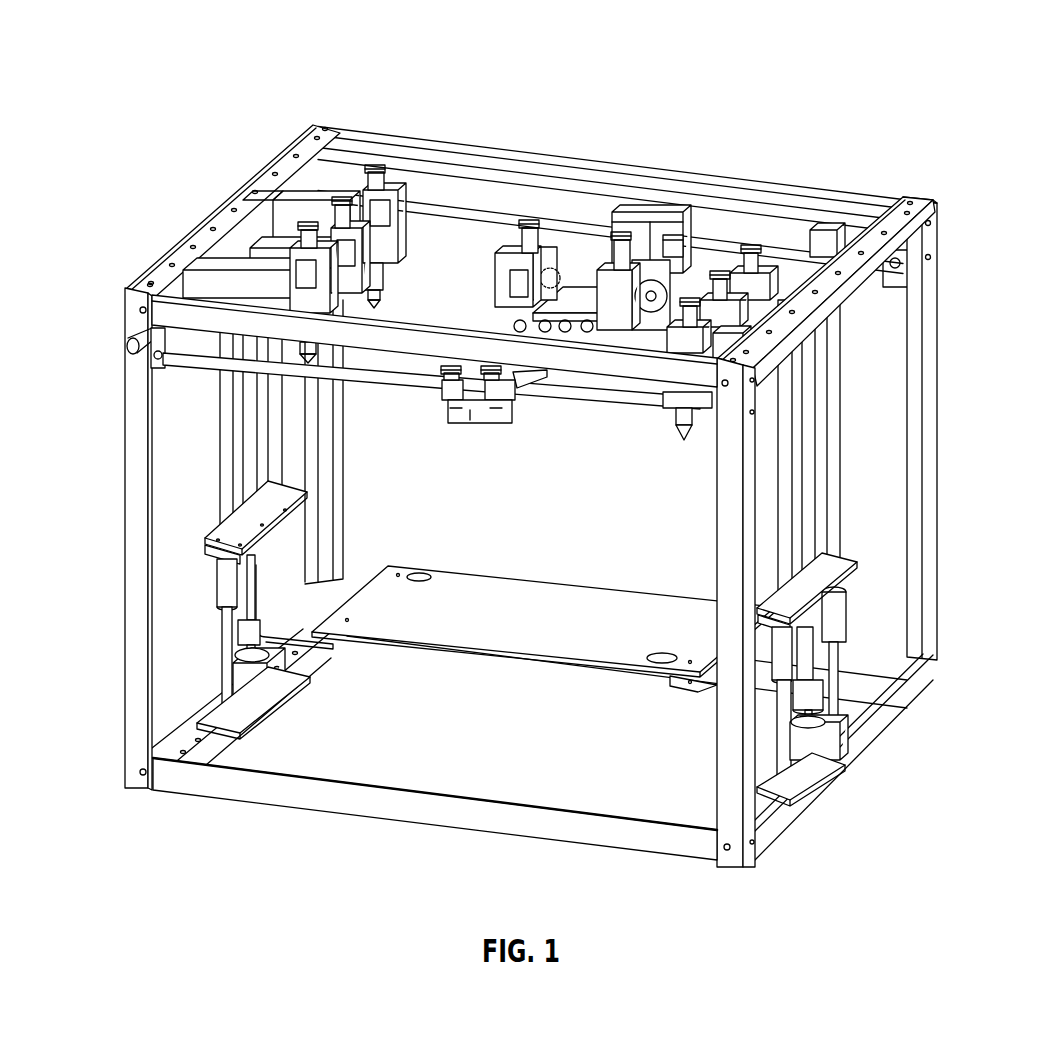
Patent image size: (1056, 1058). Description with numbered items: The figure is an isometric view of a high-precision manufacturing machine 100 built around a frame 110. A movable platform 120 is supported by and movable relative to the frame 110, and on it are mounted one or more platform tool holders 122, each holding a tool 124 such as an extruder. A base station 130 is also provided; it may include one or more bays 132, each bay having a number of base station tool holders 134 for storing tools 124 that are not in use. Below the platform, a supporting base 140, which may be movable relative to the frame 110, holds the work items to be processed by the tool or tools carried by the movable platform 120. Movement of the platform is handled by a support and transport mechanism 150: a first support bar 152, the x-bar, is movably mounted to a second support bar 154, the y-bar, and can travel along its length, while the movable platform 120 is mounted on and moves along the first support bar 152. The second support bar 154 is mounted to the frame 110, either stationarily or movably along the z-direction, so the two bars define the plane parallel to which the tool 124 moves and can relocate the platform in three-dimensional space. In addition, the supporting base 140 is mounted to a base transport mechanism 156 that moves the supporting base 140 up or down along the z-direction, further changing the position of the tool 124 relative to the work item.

The machine 100 is at (907, 128).
The frame 110 is at (138, 470).
The movable platform 120 is at (572, 287).
The platform tool holder 122 is at (548, 243).
The tool 124 is at (497, 241).
The base station 130 is at (262, 182).
The bay 132 is at (300, 235).
The base station tool holder 134 is at (245, 287).
The supporting base 140 is at (515, 628).
The support and transport mechanism 150 is at (558, 418).
The first support bar 152 is at (690, 420).
The second support bar 154 is at (533, 378).
The base transport mechanism 156 is at (833, 615).